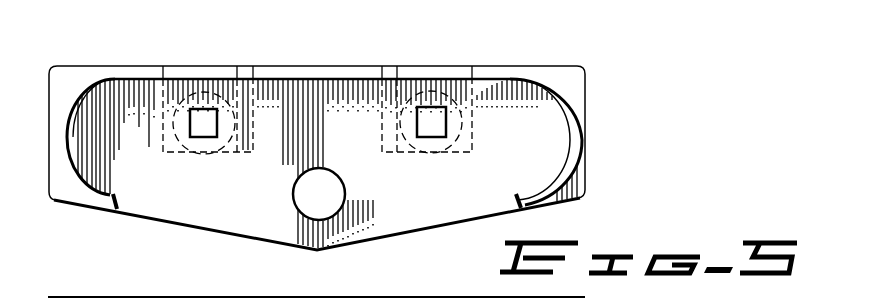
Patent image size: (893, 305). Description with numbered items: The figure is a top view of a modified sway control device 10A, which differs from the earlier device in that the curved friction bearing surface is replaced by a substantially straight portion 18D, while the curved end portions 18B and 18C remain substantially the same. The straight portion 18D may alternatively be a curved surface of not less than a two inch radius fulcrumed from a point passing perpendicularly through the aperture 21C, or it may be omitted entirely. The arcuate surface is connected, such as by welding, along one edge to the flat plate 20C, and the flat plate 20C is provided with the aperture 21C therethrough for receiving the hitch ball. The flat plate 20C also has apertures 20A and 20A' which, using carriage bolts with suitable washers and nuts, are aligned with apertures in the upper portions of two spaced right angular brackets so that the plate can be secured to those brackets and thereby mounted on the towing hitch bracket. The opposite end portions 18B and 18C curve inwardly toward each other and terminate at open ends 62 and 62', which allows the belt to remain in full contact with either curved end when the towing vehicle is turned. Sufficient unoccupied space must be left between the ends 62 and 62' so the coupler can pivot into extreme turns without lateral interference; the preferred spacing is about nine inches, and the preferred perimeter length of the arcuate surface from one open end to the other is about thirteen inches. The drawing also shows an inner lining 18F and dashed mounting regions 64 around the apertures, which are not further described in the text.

The sway control device 10A is at (452, 38).
The substantially straight portion 18D is at (297, 64).
The curved end 18C is at (54, 138).
The curved end 18B is at (586, 137).
The inner curved wall lining 18F is at (560, 112).
The aperture 20A is at (181, 126).
The aperture 20A' is at (462, 125).
The flat plate 20C is at (236, 233).
The aperture 21C is at (322, 193).
The open end 62 is at (135, 203).
The open end 62' is at (497, 204).
The mounting region outline 64 is at (217, 153).